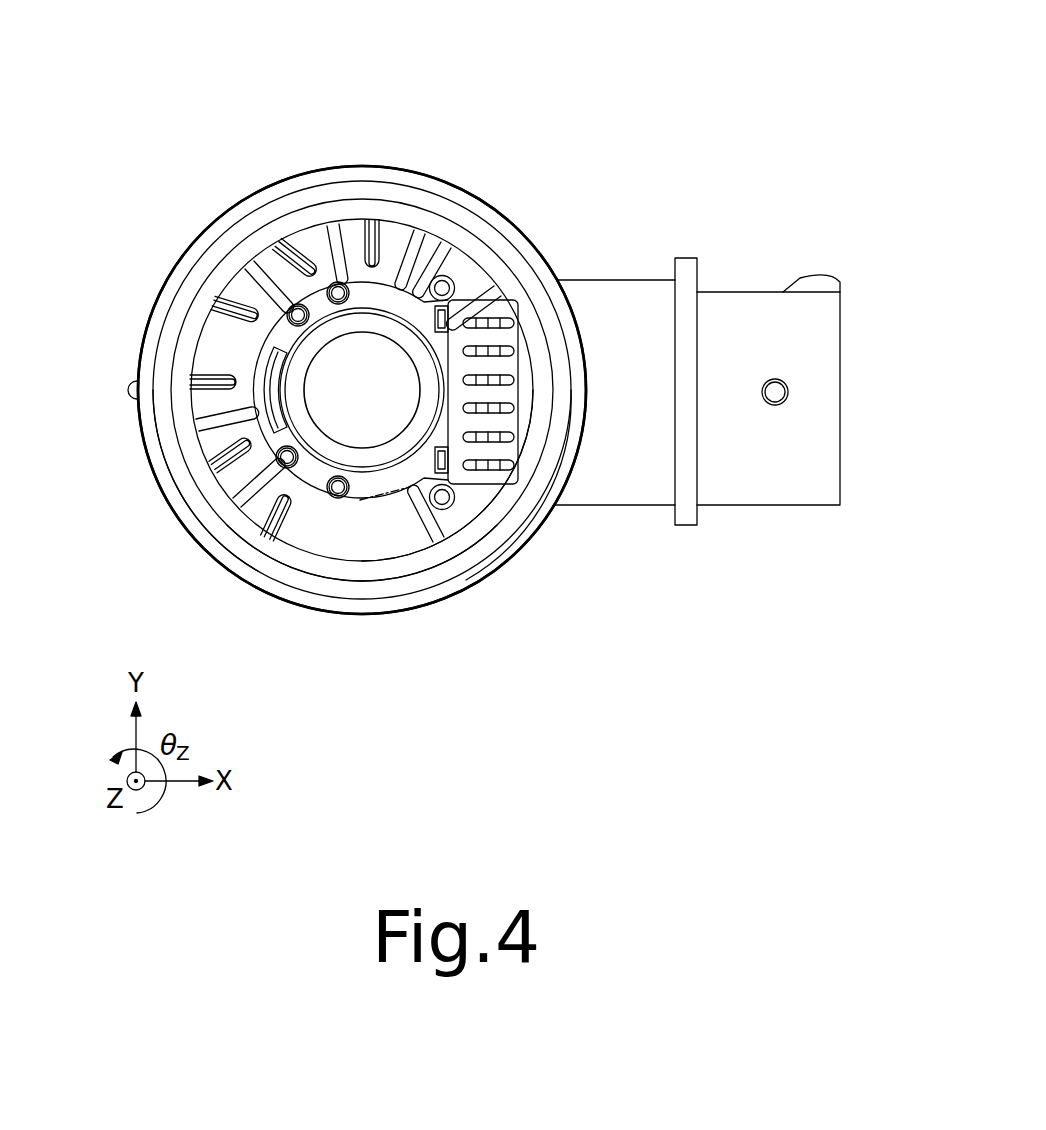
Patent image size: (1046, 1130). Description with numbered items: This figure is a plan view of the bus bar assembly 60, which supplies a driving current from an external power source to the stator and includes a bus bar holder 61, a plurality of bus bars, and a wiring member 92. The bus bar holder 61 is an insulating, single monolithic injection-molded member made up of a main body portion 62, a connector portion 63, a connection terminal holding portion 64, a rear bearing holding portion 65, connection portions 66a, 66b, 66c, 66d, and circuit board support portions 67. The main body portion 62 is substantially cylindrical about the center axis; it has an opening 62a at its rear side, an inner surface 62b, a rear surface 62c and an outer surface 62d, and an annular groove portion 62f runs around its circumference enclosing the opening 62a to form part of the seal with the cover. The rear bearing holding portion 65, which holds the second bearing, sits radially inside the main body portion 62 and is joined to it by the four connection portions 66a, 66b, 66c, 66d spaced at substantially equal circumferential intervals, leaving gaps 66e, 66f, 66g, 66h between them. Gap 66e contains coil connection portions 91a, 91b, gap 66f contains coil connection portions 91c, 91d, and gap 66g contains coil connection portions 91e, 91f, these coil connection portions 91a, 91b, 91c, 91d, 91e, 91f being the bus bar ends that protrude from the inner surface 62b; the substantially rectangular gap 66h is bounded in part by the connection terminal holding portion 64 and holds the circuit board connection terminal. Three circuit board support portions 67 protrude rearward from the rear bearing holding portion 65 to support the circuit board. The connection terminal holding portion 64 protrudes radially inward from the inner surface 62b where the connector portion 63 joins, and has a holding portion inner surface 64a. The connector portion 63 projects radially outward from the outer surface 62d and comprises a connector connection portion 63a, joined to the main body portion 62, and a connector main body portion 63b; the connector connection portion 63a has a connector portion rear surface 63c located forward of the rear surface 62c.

The bus bar assembly 60 is at (808, 104).
The bus bar holder 61 is at (243, 193).
The main body portion 62 is at (397, 172).
The opening 62a is at (423, 562).
The inner surface of main body portion 62b is at (380, 560).
The rear surface of main body portion 62c is at (440, 597).
The outer surface of main body portion 62d is at (166, 490).
The groove portion 62f is at (340, 597).
The connector portion 63 is at (697, 360).
The connector connection portion 63a is at (612, 300).
The connector main body portion 63b is at (768, 333).
The connector portion rear surface 63c is at (652, 457).
The connection terminal holding portion 64 is at (523, 390).
The holding portion inner surface 64a is at (507, 423).
The rear bearing holding portion 65 is at (388, 295).
The connection portion 66a is at (432, 527).
The connection portion 66b is at (200, 417).
The connection portion 66c is at (285, 270).
The connection portion 66d is at (445, 262).
The gap 66e is at (300, 517).
The gap 66f is at (237, 297).
The gap 66g is at (400, 230).
The gap 66h is at (485, 300).
The circuit board support portion 67 is at (442, 275).
The coil connection portion 91a is at (285, 527).
The coil connection portion 91b is at (228, 490).
The coil connection portion 91c is at (267, 398).
The coil connection portion 91d is at (213, 310).
The coil connection portion 91e is at (300, 246).
The coil connection portion 91f is at (372, 220).
The wiring member 92 is at (498, 305).